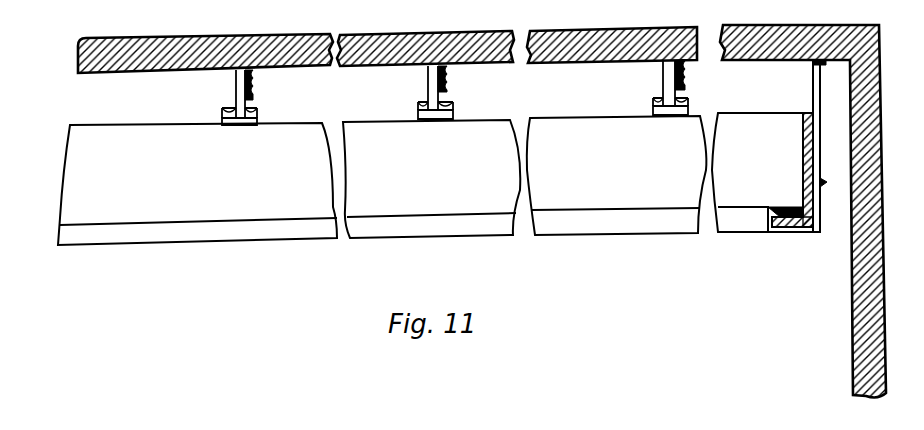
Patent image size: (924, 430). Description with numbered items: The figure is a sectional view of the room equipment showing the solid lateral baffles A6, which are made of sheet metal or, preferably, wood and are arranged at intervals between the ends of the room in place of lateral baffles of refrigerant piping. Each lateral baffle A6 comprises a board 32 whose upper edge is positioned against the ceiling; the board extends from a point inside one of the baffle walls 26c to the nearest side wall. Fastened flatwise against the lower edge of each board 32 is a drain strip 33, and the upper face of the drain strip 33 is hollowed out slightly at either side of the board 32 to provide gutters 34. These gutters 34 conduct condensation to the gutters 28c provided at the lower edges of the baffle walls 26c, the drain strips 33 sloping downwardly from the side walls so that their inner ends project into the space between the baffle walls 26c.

The board 32 is at (237, 86).
The drain strip 33 is at (237, 128).
The gutters 34 is at (252, 110).
The baffle walls 26c is at (557, 132).
The gutters 28c is at (452, 211).
The solid lateral baffles A6 is at (258, 92).